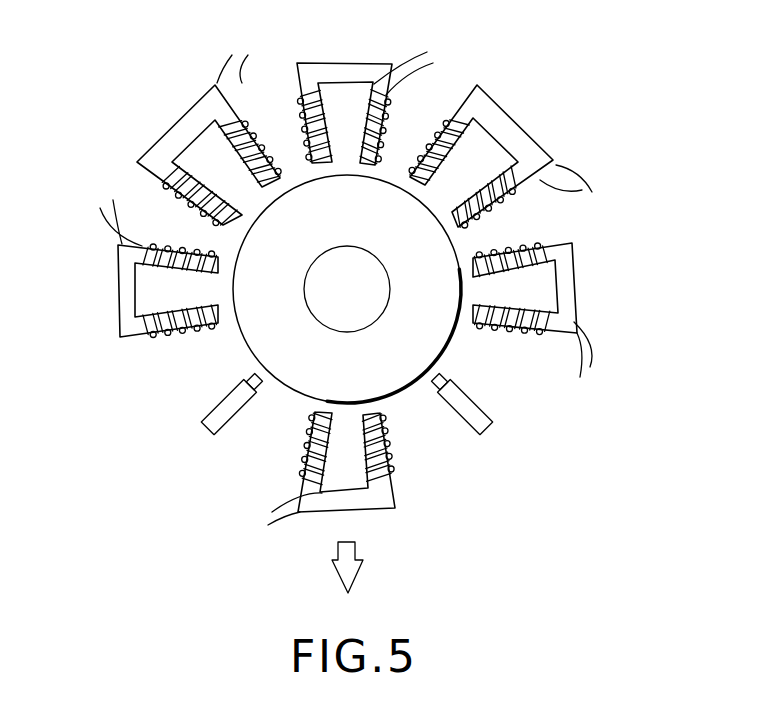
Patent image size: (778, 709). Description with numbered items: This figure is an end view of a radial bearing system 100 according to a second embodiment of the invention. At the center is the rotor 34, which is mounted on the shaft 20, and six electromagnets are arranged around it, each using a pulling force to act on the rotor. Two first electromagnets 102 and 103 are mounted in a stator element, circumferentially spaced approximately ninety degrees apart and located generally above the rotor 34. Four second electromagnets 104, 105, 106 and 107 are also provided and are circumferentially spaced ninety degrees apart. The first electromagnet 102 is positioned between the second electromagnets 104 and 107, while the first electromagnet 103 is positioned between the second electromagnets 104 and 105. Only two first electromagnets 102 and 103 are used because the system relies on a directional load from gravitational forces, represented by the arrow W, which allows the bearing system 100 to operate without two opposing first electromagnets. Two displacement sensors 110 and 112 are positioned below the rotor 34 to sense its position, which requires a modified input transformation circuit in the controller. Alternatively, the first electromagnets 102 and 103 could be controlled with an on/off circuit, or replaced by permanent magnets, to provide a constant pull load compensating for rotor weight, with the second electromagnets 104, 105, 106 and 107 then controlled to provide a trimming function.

The shaft 20 is at (383, 258).
The rotor 34 is at (400, 393).
The radial bearing system 100 is at (473, 60).
The first electromagnet 102 is at (178, 110).
The first electromagnet 103 is at (537, 134).
The second electromagnet 104 is at (322, 63).
The second electromagnet 105 is at (578, 268).
The second electromagnet 106 is at (373, 513).
The second electromagnet 107 is at (117, 307).
The displacement sensor 110 is at (490, 437).
The displacement sensor 112 is at (217, 435).
The arrow W is at (340, 580).